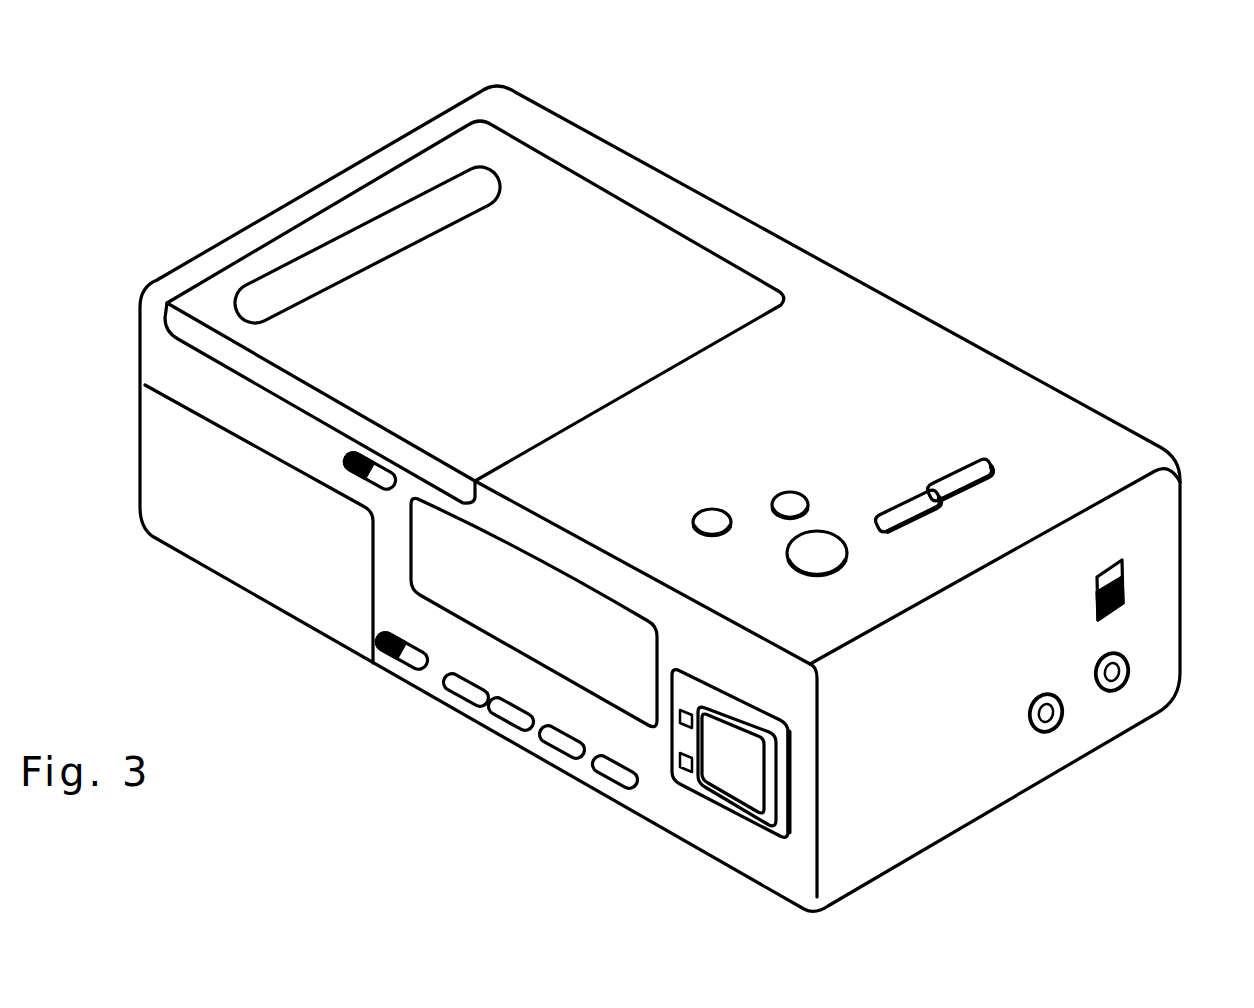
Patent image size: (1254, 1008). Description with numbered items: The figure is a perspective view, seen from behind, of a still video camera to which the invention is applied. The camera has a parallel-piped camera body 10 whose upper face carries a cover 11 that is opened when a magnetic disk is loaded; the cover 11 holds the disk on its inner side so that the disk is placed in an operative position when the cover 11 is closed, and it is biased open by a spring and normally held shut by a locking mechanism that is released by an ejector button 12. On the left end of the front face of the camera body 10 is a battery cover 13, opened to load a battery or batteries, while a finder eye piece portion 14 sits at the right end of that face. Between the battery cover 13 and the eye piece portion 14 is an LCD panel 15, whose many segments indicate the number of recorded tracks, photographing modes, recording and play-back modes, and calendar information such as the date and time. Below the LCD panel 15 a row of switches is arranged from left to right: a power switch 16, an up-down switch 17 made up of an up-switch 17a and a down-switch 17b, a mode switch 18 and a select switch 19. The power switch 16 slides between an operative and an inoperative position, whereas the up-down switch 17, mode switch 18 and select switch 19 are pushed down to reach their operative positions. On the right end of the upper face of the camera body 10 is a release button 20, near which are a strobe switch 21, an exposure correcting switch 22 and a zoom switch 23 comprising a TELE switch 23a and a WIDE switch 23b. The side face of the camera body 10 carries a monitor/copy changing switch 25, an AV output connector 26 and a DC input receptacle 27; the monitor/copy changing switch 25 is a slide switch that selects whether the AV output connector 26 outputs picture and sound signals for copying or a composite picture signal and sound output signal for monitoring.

The camera body 10 is at (1082, 422).
The cover 11 is at (557, 200).
The ejector button 12 is at (358, 473).
The battery cover 13 is at (192, 548).
The finder eye piece portion 14 is at (743, 800).
The LCD panel 15 is at (533, 552).
The power switch 16 is at (393, 657).
The up-down switch 17 is at (472, 764).
The up-switch 17a is at (468, 700).
The down-switch 17b is at (510, 726).
The mode switch 18 is at (565, 753).
The select switch 19 is at (633, 790).
The release button 20 is at (823, 567).
The strobe switch 21 is at (708, 508).
The exposure correcting switch 22 is at (792, 490).
The zoom switch 23 is at (936, 443).
The TELE switch 23a is at (903, 503).
The WIDE switch 23b is at (963, 451).
The monitor/copy changing switch 25 is at (1128, 602).
The AV output connector 26 is at (1120, 690).
The DC input receptacle 27 is at (1040, 733).